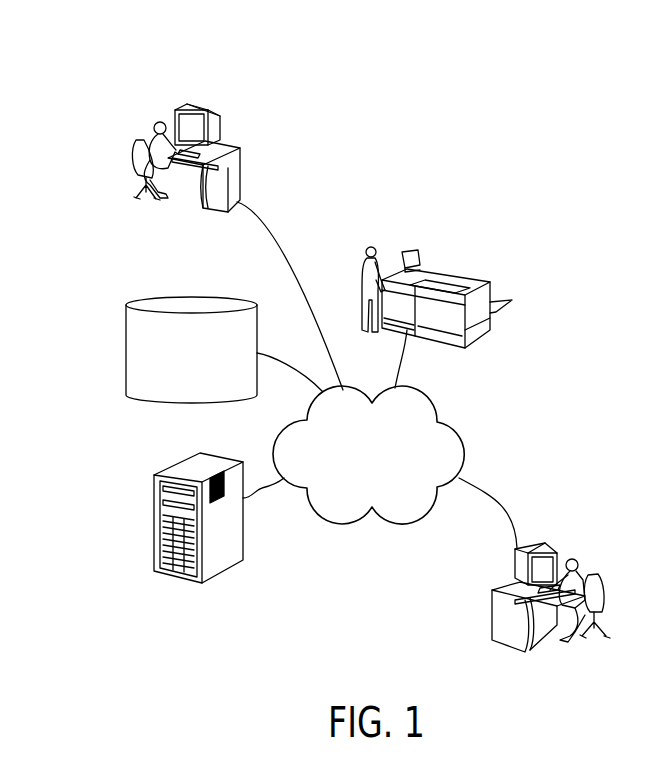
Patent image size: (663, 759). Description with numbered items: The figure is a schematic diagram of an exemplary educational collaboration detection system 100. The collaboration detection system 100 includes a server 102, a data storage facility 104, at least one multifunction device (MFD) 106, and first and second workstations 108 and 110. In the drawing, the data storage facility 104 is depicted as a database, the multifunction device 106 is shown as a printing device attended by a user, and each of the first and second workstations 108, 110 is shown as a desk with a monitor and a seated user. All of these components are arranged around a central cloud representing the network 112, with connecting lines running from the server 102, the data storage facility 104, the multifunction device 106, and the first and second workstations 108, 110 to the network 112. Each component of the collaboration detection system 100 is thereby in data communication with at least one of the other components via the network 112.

The educational collaboration detection system 100 is at (73, 54).
The server 102 is at (182, 462).
The data storage facility 104 is at (208, 297).
The multifunction device 106 is at (474, 281).
The first workstation 108 is at (212, 108).
The second workstation 110 is at (553, 553).
The network 112 is at (466, 441).